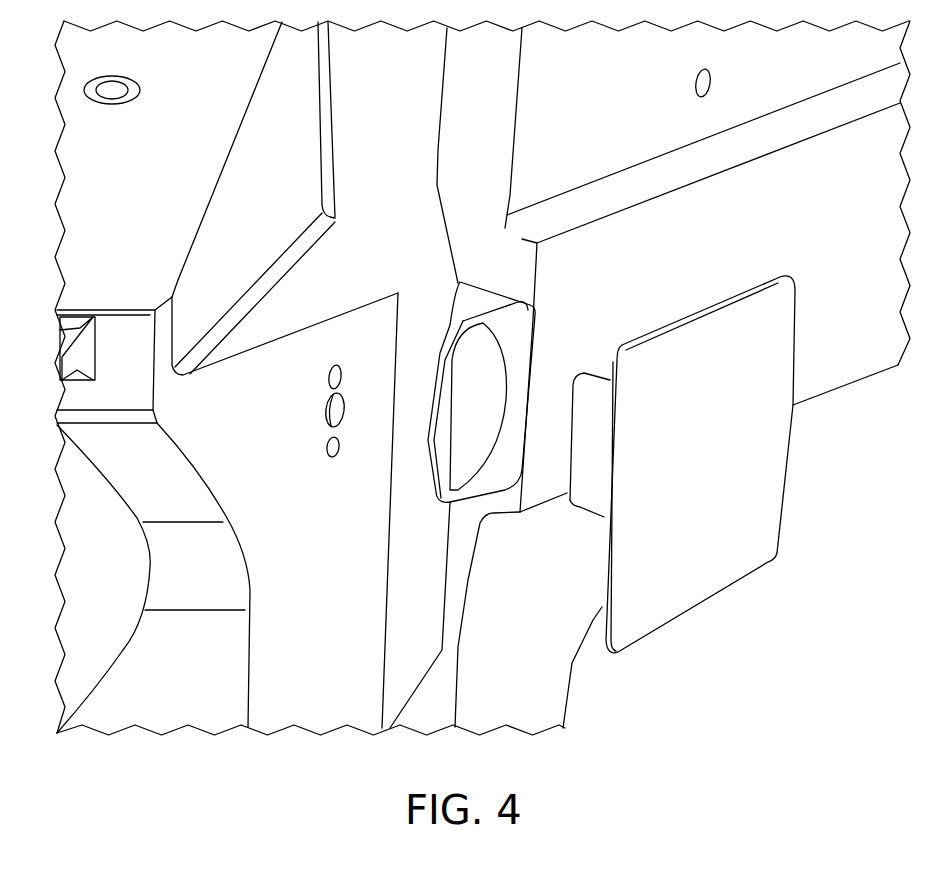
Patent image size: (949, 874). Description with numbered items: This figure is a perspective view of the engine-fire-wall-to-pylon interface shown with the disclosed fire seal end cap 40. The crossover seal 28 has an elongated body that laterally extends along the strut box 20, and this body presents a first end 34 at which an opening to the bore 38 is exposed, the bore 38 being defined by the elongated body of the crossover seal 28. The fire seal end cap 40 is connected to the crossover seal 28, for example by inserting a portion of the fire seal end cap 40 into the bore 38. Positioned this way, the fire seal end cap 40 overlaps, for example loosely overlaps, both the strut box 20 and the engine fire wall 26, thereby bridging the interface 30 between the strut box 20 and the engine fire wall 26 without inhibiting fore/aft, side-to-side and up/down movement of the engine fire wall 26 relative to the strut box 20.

The strut box 20 is at (862, 368).
The engine fire wall 26 is at (432, 95).
The crossover seal 28 is at (520, 326).
The interface 30 is at (703, 160).
The first end 34 is at (401, 271).
The bore 38 is at (492, 385).
The fire seal end cap 40 is at (767, 545).